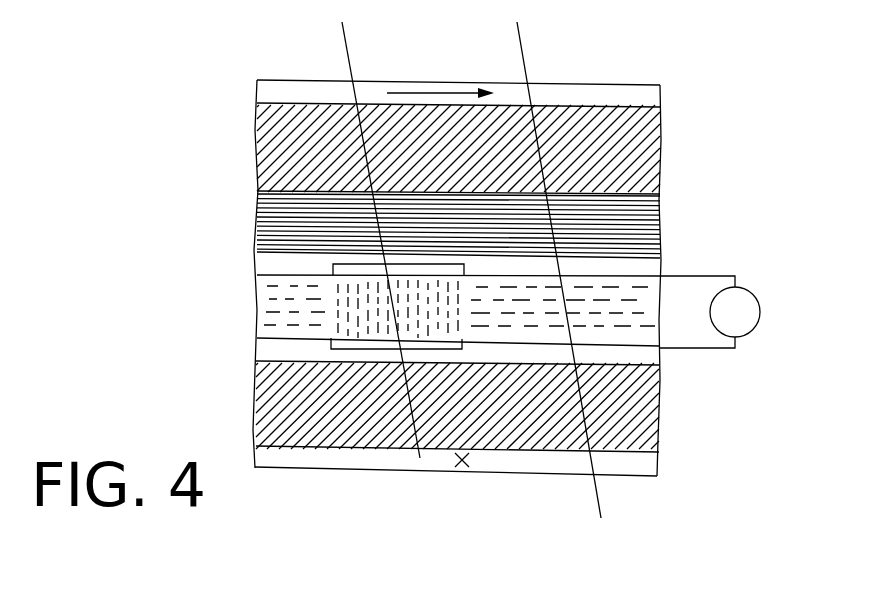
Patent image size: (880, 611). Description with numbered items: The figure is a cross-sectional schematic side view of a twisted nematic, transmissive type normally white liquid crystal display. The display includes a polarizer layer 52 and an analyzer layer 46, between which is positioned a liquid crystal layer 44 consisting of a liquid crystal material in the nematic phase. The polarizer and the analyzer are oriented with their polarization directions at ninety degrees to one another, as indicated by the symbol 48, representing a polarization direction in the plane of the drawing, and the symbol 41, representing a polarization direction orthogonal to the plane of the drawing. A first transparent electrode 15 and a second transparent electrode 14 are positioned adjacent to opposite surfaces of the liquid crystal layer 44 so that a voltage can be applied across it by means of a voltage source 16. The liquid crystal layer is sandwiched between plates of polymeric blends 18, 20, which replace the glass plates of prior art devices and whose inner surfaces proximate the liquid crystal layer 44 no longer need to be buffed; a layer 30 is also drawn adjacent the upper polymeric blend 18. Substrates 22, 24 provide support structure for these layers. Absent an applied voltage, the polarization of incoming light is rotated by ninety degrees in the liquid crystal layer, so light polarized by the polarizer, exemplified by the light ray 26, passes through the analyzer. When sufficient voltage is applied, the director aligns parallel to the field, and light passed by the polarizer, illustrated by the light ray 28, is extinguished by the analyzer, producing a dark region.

The second transparent electrode 14 is at (450, 350).
The first transparent electrode 15 is at (428, 264).
The voltage source 16 is at (757, 298).
The polymeric blend 18 is at (655, 265).
The polymeric blend 20 is at (658, 362).
The substrate 22 is at (665, 160).
The substrate 24 is at (657, 415).
The light ray 26 is at (522, 40).
The light ray 28 is at (348, 40).
The polymer layer 30 is at (248, 189).
The polarization direction symbol 41 is at (461, 470).
The liquid crystal layer 44 is at (253, 305).
The analyzer layer 46 is at (657, 462).
The polarization direction symbol 48 is at (450, 93).
The polarizer layer 52 is at (663, 102).